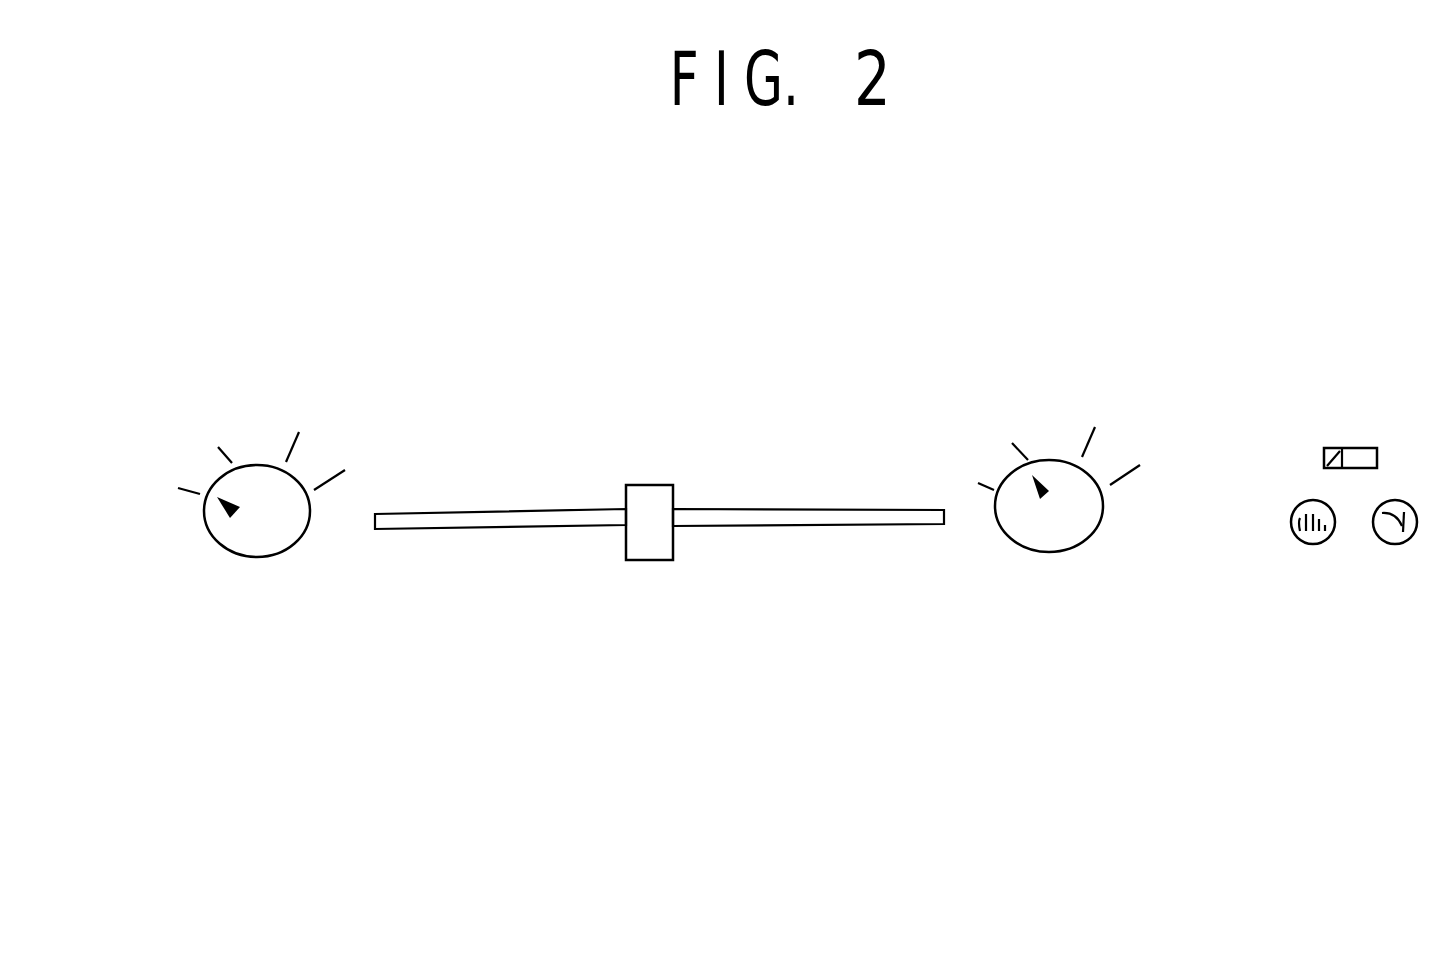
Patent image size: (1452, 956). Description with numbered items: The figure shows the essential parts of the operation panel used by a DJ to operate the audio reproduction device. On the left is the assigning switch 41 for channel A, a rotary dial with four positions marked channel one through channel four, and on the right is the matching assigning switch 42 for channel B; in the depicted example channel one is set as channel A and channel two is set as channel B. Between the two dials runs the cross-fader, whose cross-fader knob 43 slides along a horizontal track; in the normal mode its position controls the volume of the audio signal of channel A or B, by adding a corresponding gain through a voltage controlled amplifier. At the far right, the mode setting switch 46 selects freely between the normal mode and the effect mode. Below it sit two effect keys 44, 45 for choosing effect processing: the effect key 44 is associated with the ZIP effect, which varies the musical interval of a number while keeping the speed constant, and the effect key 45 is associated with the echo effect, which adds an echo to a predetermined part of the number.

The assigning switch for channel A 41 is at (247, 557).
The assigning switch for channel B 42 is at (1067, 552).
The cross-fader knob 43 is at (645, 560).
The effect key 44 is at (1310, 545).
The effect key 45 is at (1398, 545).
The mode setting switch 46 is at (1355, 438).